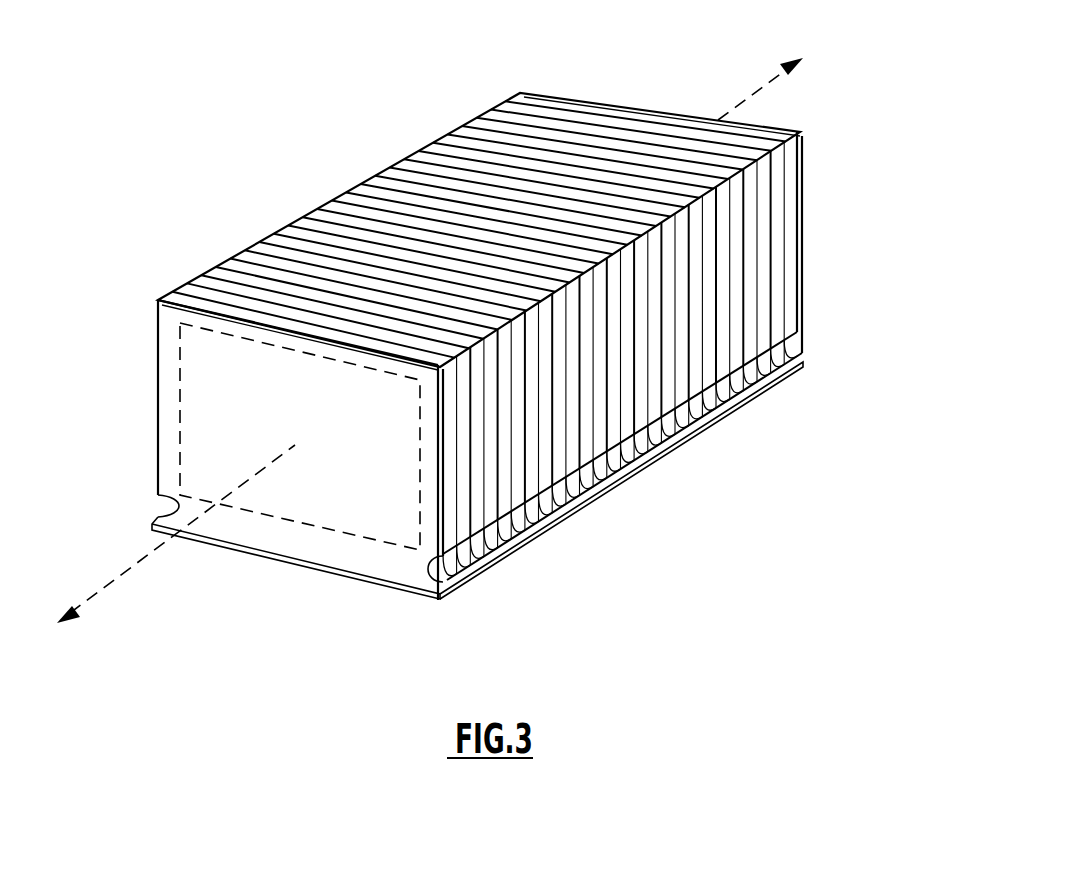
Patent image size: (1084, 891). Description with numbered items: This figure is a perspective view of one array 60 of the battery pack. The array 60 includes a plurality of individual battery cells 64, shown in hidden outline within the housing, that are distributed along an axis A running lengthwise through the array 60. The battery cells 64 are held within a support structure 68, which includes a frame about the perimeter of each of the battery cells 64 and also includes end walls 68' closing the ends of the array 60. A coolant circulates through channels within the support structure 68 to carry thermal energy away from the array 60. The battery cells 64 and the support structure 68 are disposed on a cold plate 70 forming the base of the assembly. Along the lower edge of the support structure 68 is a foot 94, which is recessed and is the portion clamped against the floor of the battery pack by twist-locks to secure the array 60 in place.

The array 60 is at (852, 78).
The battery cell 64 is at (297, 497).
The support structure 68 is at (479, 229).
The end wall 68' is at (440, 348).
The cold plate 70 is at (455, 597).
The foot 94 is at (433, 590).
The axis A is at (132, 568).